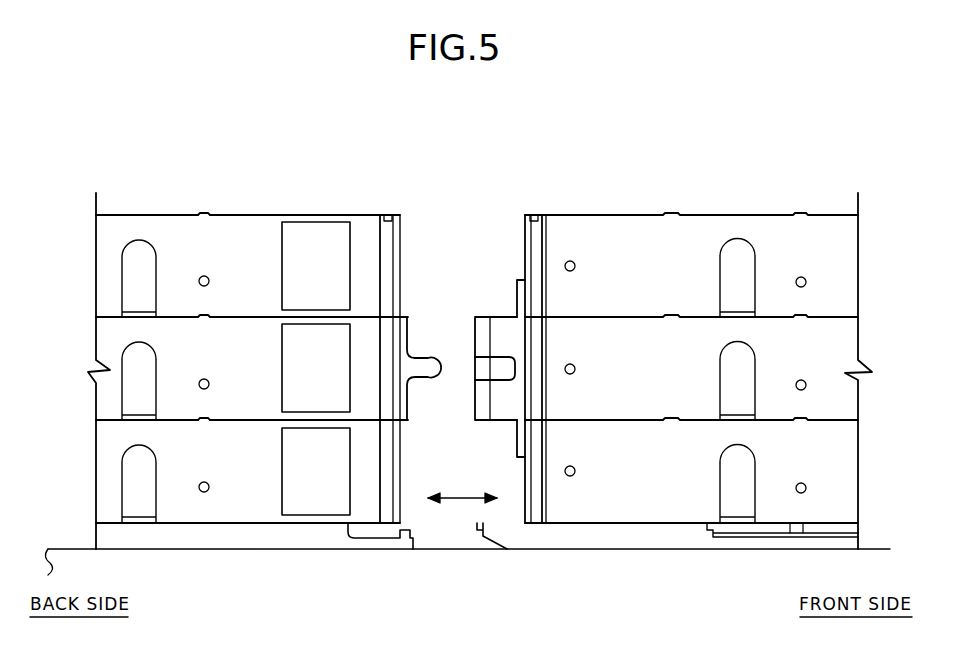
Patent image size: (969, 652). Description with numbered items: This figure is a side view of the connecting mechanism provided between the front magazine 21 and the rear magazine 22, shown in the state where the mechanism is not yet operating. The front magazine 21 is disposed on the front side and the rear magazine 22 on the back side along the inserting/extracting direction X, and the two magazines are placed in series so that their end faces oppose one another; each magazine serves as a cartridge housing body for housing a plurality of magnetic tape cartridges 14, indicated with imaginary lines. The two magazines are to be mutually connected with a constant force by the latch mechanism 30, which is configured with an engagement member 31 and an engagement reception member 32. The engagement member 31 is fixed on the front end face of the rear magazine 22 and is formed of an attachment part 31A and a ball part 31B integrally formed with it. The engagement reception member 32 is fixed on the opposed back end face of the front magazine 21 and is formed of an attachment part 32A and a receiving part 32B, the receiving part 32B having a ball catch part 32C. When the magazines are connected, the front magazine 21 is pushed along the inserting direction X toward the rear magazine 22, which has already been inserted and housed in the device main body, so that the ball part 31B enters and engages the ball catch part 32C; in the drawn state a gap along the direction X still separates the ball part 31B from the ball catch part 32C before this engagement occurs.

The magnetic tape cartridges 14 is at (243, 445).
The front magazine 21 is at (575, 540).
The rear magazine 22 is at (272, 538).
The latch mechanism 30 is at (493, 135).
The engagement member 31 is at (420, 172).
The attachment part 31A is at (400, 303).
The ball part 31B is at (435, 368).
The engagement reception member 32 is at (530, 172).
The attachment part 32A is at (520, 290).
The receiving part 32B is at (485, 322).
The ball catch part 32C is at (483, 372).
The inserting/extracting direction X is at (460, 500).